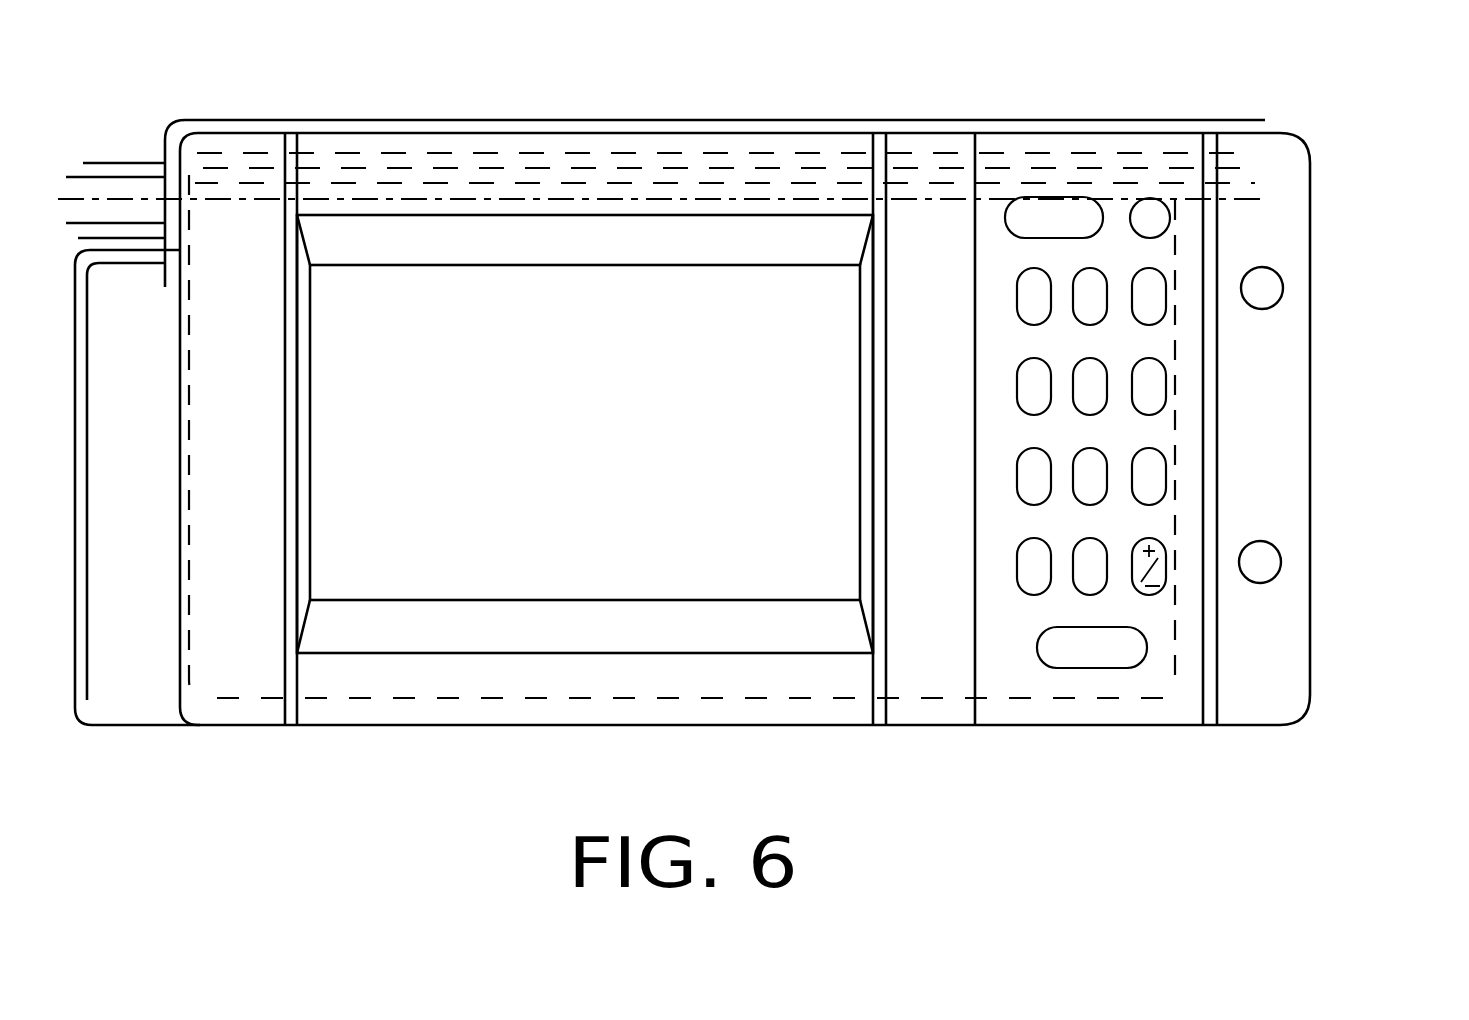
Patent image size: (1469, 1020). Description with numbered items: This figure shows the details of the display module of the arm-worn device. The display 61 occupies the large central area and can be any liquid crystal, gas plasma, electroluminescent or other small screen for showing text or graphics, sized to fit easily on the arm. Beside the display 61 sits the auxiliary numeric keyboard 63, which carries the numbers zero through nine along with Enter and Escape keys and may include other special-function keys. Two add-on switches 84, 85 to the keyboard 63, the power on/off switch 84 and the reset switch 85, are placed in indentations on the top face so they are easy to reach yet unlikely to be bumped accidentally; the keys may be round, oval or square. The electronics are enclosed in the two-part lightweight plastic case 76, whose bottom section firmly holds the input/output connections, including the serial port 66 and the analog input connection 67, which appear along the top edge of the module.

The display 61 is at (585, 434).
The auxiliary numeric keyboard 63 is at (1147, 617).
The RS-232 port 66 is at (1062, 133).
The analog input connection 67 is at (1182, 133).
The case 76 is at (138, 162).
The power on/off switch 84 is at (1282, 283).
The sleet/reset switch 85 is at (1277, 575).